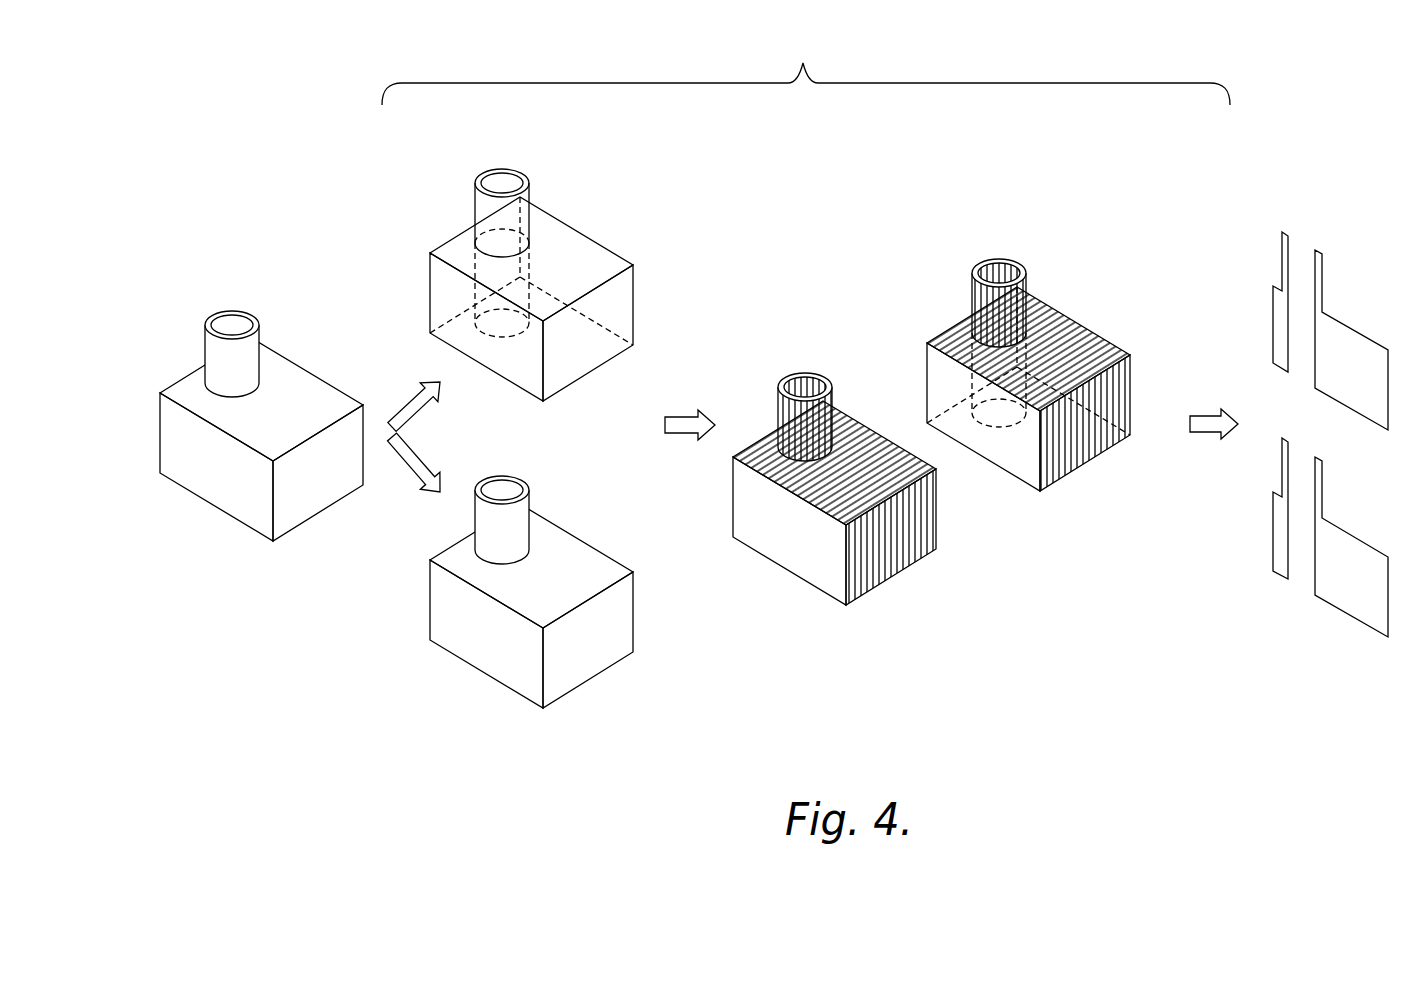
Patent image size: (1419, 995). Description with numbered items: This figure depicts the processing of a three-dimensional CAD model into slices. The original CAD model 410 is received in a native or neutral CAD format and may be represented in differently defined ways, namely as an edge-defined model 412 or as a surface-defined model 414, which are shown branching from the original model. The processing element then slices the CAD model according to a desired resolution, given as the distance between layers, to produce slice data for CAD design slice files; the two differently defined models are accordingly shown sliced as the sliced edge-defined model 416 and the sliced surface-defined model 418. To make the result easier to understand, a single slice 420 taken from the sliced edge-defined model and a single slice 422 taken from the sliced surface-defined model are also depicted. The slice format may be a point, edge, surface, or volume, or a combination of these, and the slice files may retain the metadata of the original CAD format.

The original CAD model 410 is at (207, 508).
The edge-defined model 412 is at (592, 222).
The surface-defined model 414 is at (467, 675).
The sliced edge-defined model 416 is at (1062, 303).
The sliced surface-defined model 418 is at (890, 592).
The single slice of the sliced edge-defined model 420 is at (1260, 292).
The single slice of the sliced surface-defined model 422 is at (1278, 592).